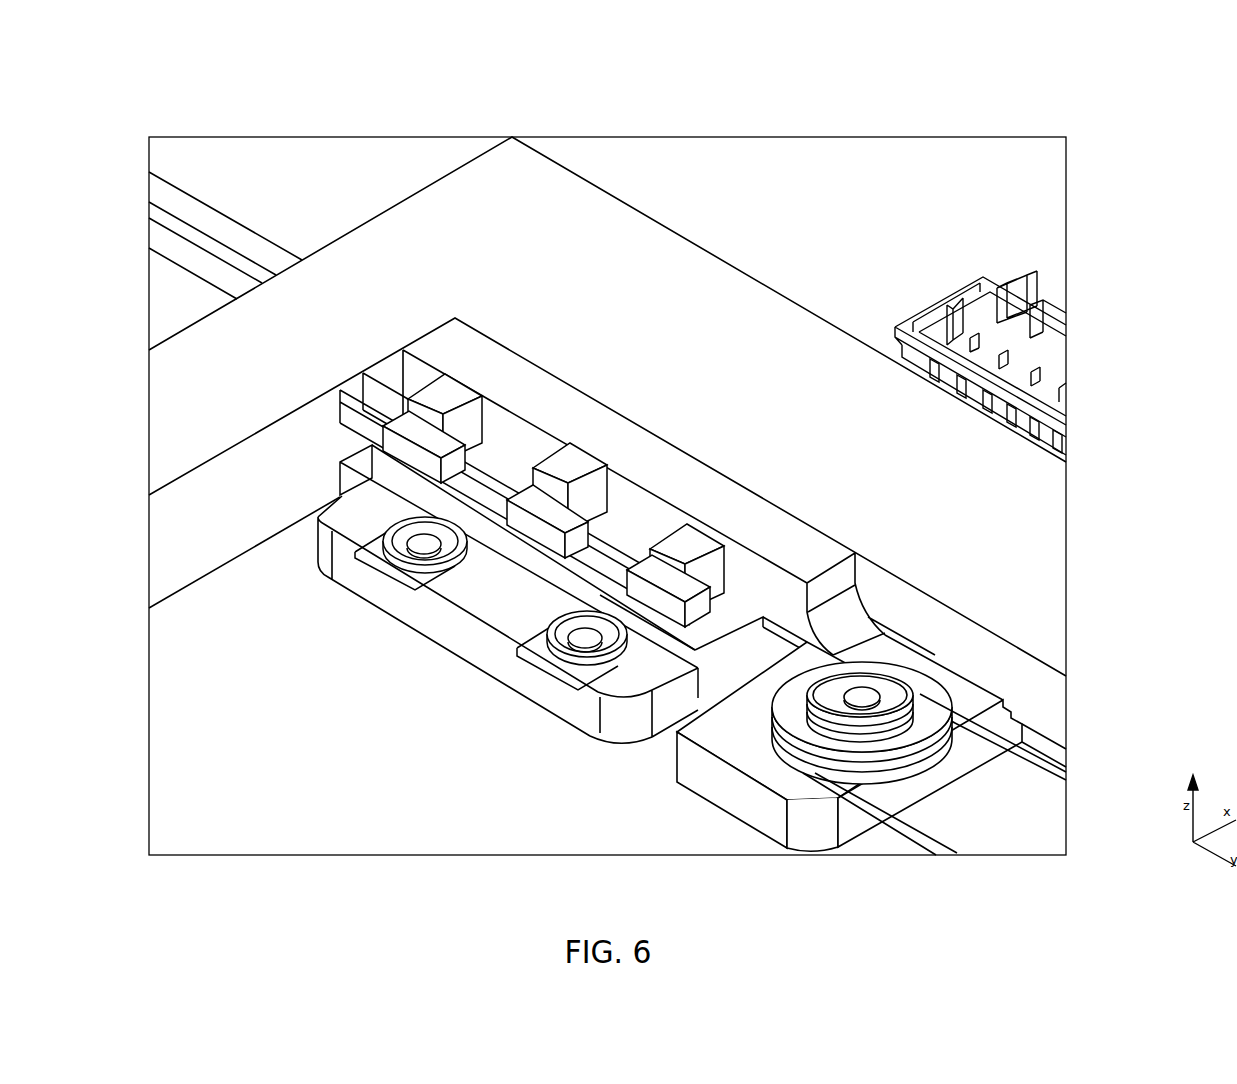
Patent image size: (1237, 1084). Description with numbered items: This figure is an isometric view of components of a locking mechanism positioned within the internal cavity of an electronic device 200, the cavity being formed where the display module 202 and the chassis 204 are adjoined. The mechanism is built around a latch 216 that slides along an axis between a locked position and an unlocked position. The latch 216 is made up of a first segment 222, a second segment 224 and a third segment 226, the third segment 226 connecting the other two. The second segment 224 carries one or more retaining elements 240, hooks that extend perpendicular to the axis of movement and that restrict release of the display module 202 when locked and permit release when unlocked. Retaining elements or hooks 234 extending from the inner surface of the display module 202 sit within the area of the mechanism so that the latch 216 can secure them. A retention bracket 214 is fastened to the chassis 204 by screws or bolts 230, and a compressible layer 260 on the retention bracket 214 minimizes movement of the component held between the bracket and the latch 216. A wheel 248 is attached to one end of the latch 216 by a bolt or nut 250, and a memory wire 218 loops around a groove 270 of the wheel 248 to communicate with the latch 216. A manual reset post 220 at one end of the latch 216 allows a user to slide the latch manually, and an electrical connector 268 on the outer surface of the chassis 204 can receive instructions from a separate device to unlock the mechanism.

The electronic device 200 is at (1068, 102).
The display module 202 is at (360, 410).
The chassis 204 is at (607, 469).
The retention bracket 214 is at (460, 632).
The latch 216 is at (508, 370).
The memory wire 218 is at (980, 737).
The manual reset post 220 is at (238, 234).
The first segment 222 is at (347, 478).
The second segment 224 is at (688, 520).
The third segment 226 is at (432, 342).
The screw or bolt 230 is at (400, 553).
The retaining elements or hooks 234 is at (722, 532).
The retaining element 240 is at (572, 452).
The wheel 248 is at (923, 695).
The bolt or nut 250 is at (873, 678).
The compressible layer 260 is at (712, 612).
The electrical connector 268 is at (1052, 306).
The groove 270 is at (790, 762).